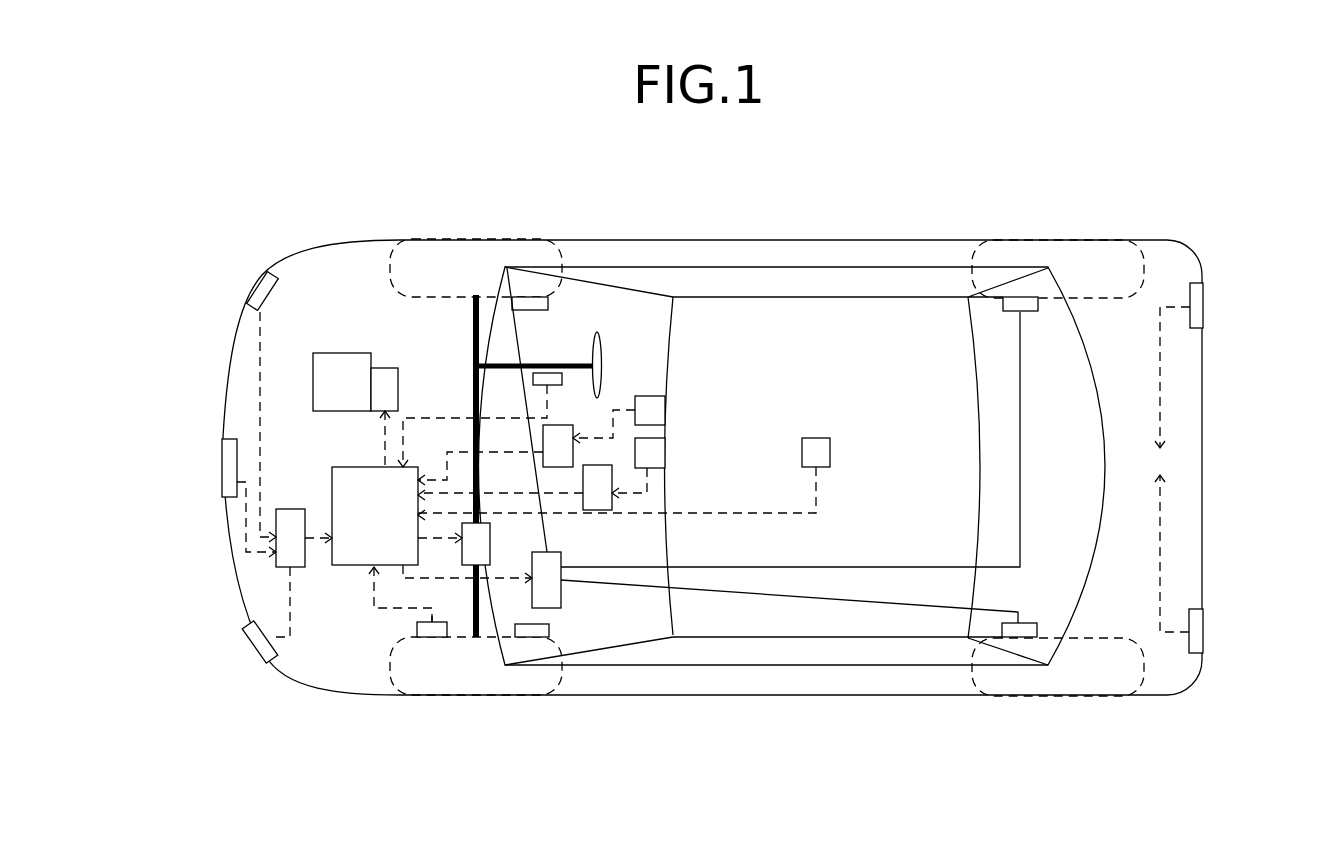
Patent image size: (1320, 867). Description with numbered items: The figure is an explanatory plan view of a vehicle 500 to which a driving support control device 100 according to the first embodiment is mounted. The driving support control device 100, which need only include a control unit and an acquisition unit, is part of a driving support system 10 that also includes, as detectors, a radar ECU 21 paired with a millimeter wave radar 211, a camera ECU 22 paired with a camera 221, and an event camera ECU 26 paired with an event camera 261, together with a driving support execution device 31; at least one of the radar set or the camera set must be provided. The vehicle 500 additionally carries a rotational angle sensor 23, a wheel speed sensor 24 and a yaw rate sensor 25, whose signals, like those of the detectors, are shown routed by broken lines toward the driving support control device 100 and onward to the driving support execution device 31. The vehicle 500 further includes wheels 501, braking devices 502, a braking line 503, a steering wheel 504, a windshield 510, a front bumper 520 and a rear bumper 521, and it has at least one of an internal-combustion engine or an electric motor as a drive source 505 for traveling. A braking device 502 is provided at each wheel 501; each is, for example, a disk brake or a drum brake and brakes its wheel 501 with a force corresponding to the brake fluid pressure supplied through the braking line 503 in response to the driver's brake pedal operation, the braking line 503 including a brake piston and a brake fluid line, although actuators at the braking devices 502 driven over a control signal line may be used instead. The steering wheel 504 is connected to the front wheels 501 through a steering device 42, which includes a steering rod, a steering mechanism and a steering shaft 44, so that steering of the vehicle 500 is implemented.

The driving support system 10 is at (340, 660).
The radar ECU 21 is at (1180, 467).
The camera ECU 22 is at (615, 487).
The rotational angle sensor 23 is at (560, 384).
The wheel speed sensor 24 is at (423, 630).
The yaw rate sensor 25 is at (816, 452).
The event camera ECU 26 is at (589, 438).
The driving support execution device 31 is at (466, 488).
The steering device 42 is at (463, 350).
The steering shaft 44 is at (475, 367).
The driving support control device 100 is at (574, 503).
The millimeter wave radar 211 is at (264, 278).
The camera 221 is at (665, 453).
The event camera 261 is at (665, 412).
The vehicle 500 is at (793, 222).
The wheels 501 is at (483, 237).
The braking devices 502 is at (528, 311).
The braking line 503 is at (548, 551).
The steering wheel 504 is at (602, 360).
The drive source 505 is at (342, 382).
The windshield 510 is at (672, 333).
The front bumper 520 is at (235, 337).
The rear bumper 521 is at (1200, 560).